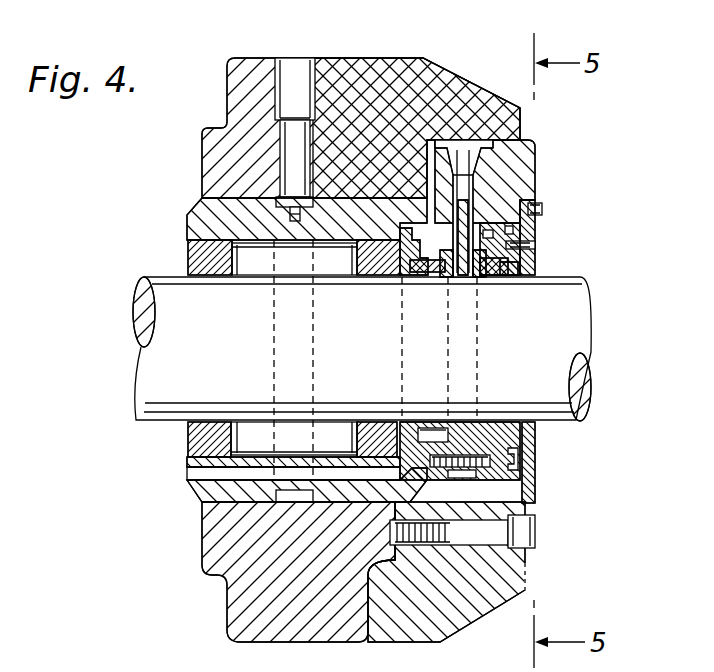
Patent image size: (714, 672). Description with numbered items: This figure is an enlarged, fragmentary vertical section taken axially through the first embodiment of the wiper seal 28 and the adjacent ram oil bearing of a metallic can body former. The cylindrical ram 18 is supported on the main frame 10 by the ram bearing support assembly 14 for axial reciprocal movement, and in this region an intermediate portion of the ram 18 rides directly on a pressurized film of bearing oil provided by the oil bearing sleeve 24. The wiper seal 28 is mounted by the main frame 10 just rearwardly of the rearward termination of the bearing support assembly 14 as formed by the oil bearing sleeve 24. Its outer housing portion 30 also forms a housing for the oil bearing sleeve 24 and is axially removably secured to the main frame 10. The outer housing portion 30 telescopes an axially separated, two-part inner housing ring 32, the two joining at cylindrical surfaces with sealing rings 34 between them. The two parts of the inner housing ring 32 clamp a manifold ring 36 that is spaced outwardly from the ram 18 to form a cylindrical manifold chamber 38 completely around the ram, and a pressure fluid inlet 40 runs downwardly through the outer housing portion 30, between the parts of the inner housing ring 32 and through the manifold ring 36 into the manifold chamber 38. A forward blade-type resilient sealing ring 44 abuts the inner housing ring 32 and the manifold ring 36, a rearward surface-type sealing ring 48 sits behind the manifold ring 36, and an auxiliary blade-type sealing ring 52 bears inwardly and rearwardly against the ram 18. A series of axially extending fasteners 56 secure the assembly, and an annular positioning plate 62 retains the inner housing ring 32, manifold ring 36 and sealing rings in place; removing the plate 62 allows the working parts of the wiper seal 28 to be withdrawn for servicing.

The main frame 10 is at (259, 50).
The ram bearing support assembly 14 is at (181, 237).
The cylindrical ram 18 is at (143, 370).
The oil bearing sleeve 24 is at (186, 258).
The wiper seal 28 is at (545, 178).
The outer housing portion 30 is at (521, 158).
The inner housing ring 32 is at (513, 235).
The sealing rings 34 is at (532, 480).
The manifold ring 36 is at (456, 280).
The manifold chamber 38 is at (472, 280).
The pressure fluid inlet 40 is at (470, 143).
The first sealing ring 44 is at (430, 277).
The second sealing ring 48 is at (484, 280).
The auxiliary sealing ring 52 is at (507, 279).
The axially extending fasteners 56 is at (534, 452).
The annular positioning plate 62 is at (531, 268).